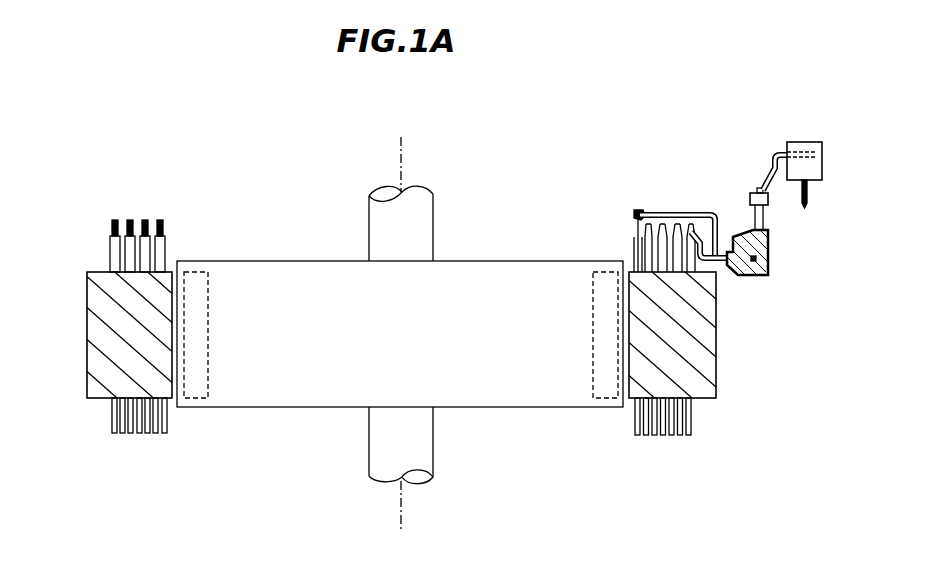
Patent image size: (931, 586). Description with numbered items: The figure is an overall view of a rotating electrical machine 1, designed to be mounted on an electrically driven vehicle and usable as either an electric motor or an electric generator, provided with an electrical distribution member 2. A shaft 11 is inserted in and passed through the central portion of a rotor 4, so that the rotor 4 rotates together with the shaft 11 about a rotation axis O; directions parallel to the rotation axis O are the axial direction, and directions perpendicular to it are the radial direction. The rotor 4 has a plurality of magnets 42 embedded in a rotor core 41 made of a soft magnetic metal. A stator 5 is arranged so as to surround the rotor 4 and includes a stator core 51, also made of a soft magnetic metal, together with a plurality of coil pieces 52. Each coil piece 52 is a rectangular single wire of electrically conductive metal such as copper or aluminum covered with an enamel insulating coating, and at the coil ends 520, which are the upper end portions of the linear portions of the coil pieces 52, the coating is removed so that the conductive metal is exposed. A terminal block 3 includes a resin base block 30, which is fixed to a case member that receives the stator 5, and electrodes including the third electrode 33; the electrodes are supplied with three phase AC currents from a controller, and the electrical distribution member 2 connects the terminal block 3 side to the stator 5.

The rotating electrical machine 1 is at (138, 138).
The electrical distribution member 2 is at (720, 198).
The terminal block 3 is at (785, 130).
The rotor 4 is at (568, 246).
The stator 5 is at (88, 215).
The shaft 11 is at (434, 218).
The base block 30 is at (801, 141).
The third electrode 33 is at (808, 196).
The rotor core 41 is at (278, 261).
The magnet 42 is at (196, 270).
The stator core 51 is at (717, 343).
The coil piece 52 is at (123, 434).
The coil end 520 is at (146, 221).
The rotation axis O is at (401, 151).